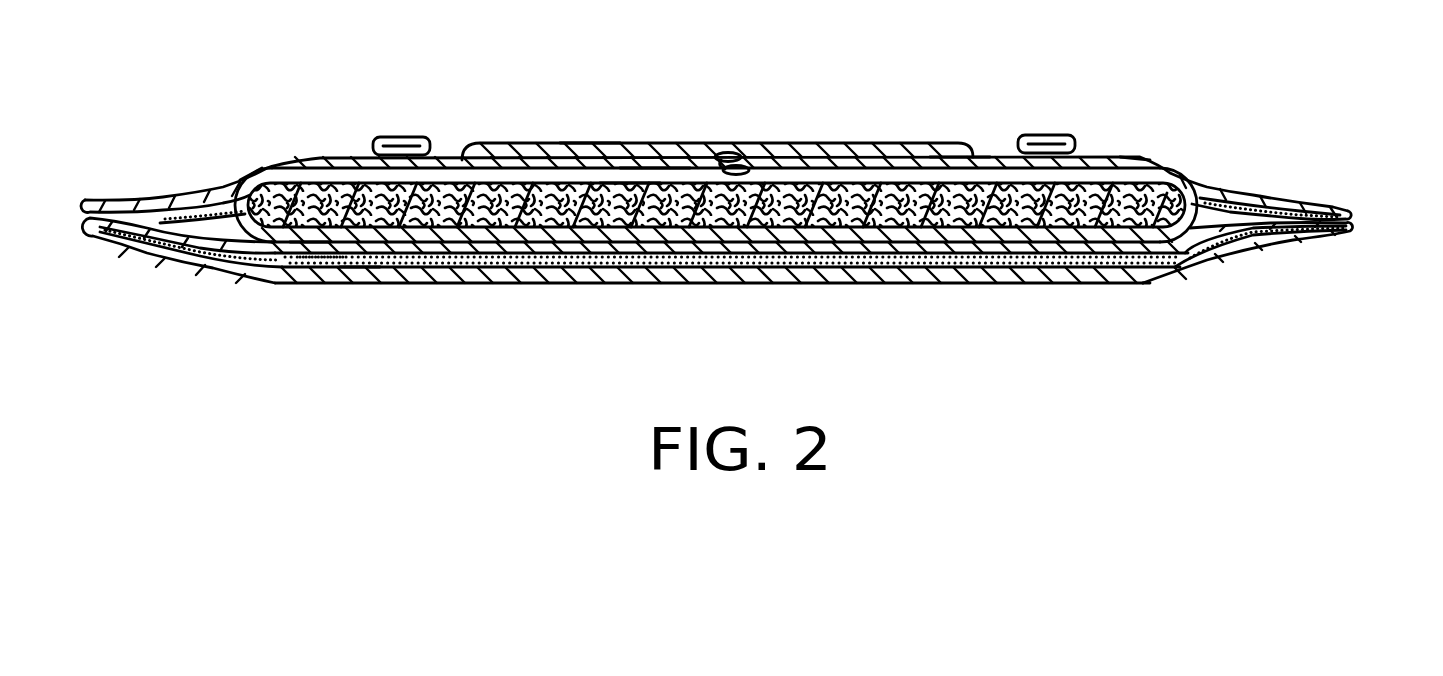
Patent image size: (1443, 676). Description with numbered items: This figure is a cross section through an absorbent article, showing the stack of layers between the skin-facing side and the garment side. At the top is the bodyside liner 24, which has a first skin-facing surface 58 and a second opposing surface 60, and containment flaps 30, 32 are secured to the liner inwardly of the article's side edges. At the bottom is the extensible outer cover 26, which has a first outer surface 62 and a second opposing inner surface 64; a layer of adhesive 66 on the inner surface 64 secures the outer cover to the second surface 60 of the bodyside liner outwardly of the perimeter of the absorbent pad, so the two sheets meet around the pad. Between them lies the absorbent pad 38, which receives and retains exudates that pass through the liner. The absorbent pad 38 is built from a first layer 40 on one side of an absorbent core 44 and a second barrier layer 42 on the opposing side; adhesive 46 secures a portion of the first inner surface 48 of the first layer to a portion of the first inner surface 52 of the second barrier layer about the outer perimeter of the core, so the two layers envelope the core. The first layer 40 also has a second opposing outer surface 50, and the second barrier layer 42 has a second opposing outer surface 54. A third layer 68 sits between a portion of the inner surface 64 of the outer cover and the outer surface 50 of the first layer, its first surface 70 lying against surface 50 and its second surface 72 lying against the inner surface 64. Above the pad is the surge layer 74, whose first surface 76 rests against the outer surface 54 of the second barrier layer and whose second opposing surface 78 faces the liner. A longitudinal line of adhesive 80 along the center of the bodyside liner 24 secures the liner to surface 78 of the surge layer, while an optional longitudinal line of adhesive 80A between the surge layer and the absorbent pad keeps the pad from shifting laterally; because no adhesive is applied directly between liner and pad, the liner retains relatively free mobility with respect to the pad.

The bodyside liner 24 is at (957, 141).
The extensible outer cover 26 is at (1240, 262).
The containment flap 30 is at (1050, 135).
The containment flap 32 is at (415, 137).
The absorbent pad 38 is at (250, 179).
The first layer 40 is at (560, 246).
The second barrier layer 42 is at (1180, 170).
The absorbent core 44 is at (300, 165).
The adhesive 46 is at (205, 192).
The first inner surface of first layer 48 is at (790, 232).
The second outer surface of first layer 50 is at (850, 254).
The first inner surface of second barrier layer 52 is at (342, 180).
The second outer surface of second barrier layer 54 is at (465, 160).
The first skin-facing surface of bodyside liner 58 is at (806, 150).
The second surface of bodyside liner 60 is at (1130, 175).
The first outer surface of outer cover 62 is at (998, 285).
The second inner surface of outer cover 64 is at (1082, 270).
The layer of adhesive 66 is at (113, 240).
The third layer 68 is at (322, 263).
The first surface of third layer 70 is at (312, 240).
The second surface of third layer 72 is at (355, 269).
The surge layer 74 is at (592, 141).
The first surface of surge layer 76 is at (648, 176).
The second surface of surge layer 78 is at (630, 176).
The line of adhesive 80 is at (725, 152).
The line of adhesive 80A is at (745, 168).